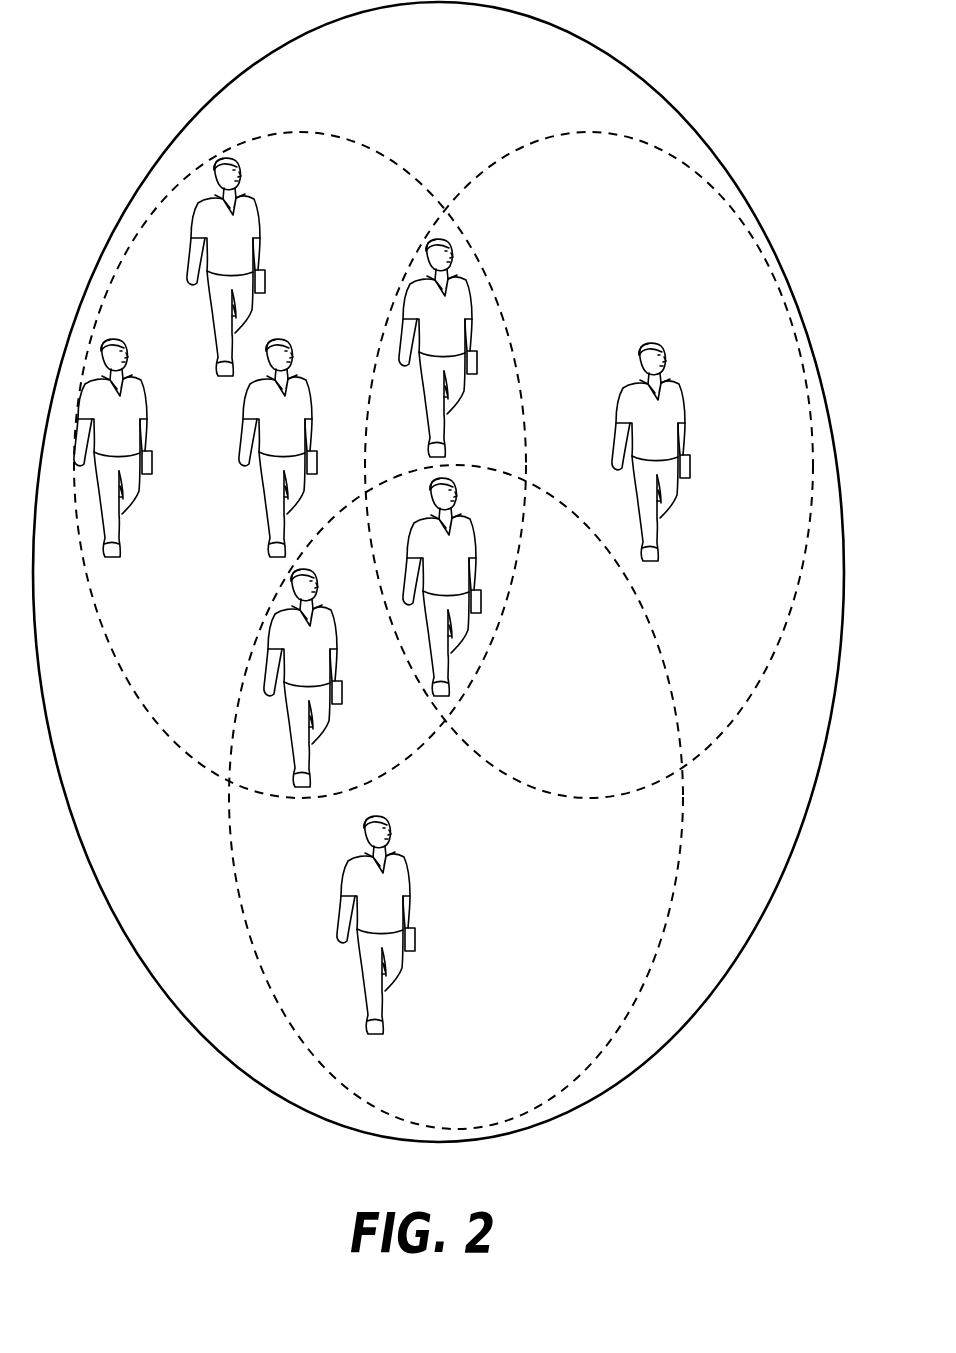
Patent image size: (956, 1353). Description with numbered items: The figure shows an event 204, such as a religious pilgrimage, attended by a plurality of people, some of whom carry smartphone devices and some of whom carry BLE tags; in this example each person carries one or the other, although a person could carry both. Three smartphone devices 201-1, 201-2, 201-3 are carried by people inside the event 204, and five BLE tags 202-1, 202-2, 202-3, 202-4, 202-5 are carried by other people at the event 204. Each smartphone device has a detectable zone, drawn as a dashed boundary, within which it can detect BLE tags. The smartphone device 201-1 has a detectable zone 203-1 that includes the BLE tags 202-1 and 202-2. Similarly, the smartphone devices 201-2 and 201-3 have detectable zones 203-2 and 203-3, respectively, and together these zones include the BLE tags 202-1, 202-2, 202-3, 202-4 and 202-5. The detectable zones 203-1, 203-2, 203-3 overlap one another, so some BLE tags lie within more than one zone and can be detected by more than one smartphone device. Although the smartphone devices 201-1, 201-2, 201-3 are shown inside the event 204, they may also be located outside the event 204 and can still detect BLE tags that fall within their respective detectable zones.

The smartphone device 201-1 is at (690, 459).
The smartphone device 201-2 is at (415, 932).
The smartphone device 201-3 is at (152, 455).
The BLE tag 202-1 is at (477, 355).
The BLE tag 202-2 is at (481, 595).
The BLE tag 202-3 is at (342, 704).
The BLE tag 202-4 is at (265, 274).
The BLE tag 202-5 is at (317, 455).
The detectable zone 203-1 is at (740, 717).
The detectable zone 203-2 is at (679, 855).
The detectable zone 203-3 is at (133, 689).
The event 204 is at (658, 1052).